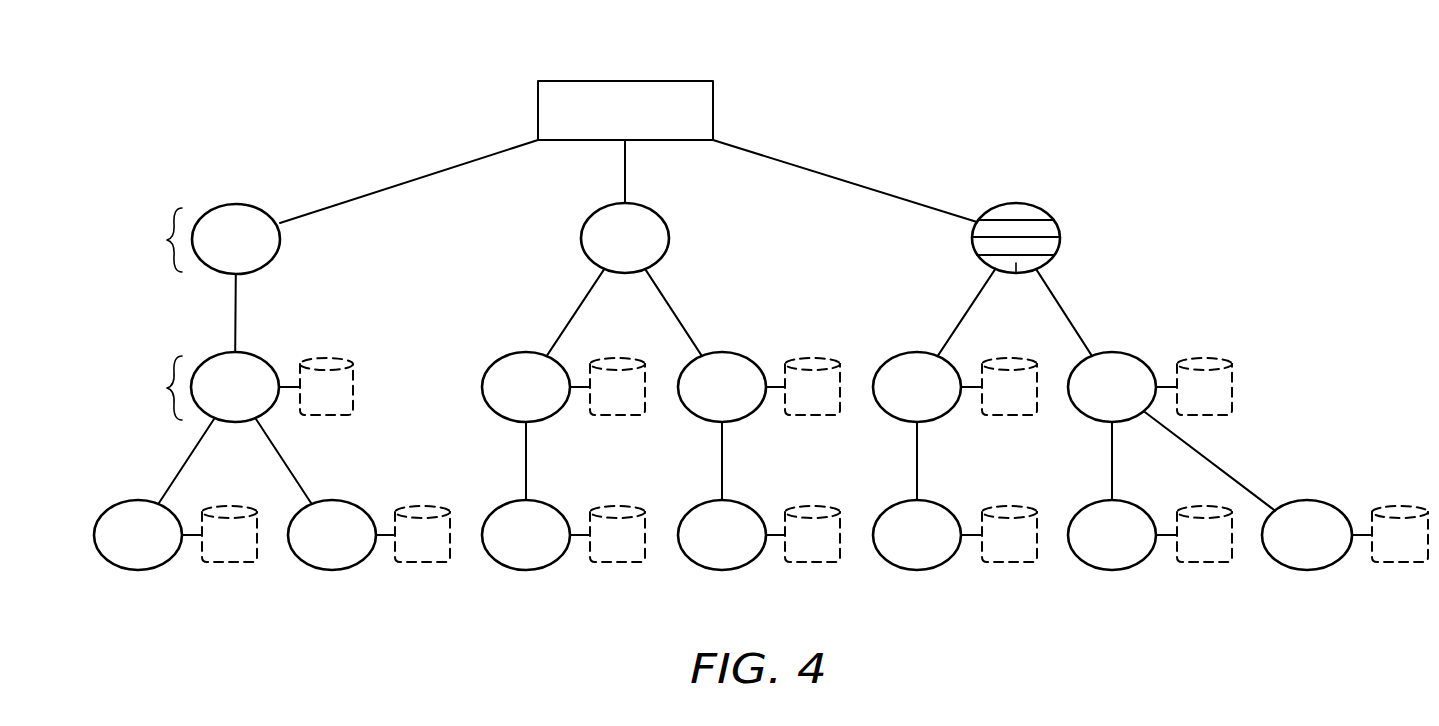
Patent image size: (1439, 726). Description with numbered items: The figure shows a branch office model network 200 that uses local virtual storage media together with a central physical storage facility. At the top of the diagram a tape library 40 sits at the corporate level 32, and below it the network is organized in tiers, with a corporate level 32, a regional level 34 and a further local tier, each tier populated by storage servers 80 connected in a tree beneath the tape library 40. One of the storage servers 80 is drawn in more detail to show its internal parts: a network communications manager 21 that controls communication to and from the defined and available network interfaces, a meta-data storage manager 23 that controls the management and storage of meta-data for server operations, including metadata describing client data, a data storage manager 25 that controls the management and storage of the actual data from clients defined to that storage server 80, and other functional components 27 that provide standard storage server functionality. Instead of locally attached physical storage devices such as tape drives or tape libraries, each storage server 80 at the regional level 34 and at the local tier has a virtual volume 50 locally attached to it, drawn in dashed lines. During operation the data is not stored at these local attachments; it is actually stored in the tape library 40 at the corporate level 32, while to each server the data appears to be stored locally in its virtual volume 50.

The branch office model network 200 is at (286, 105).
The tape library 40 is at (639, 126).
The storage server 80 is at (250, 255).
The virtual volume 50 is at (331, 358).
The network communications manager 21 is at (1016, 208).
The meta-data storage manager 23 is at (975, 233).
The data storage manager 25 is at (1059, 245).
The other functional components 27 is at (1017, 271).
The corporate level 32 is at (162, 240).
The regional level 34 is at (162, 388).